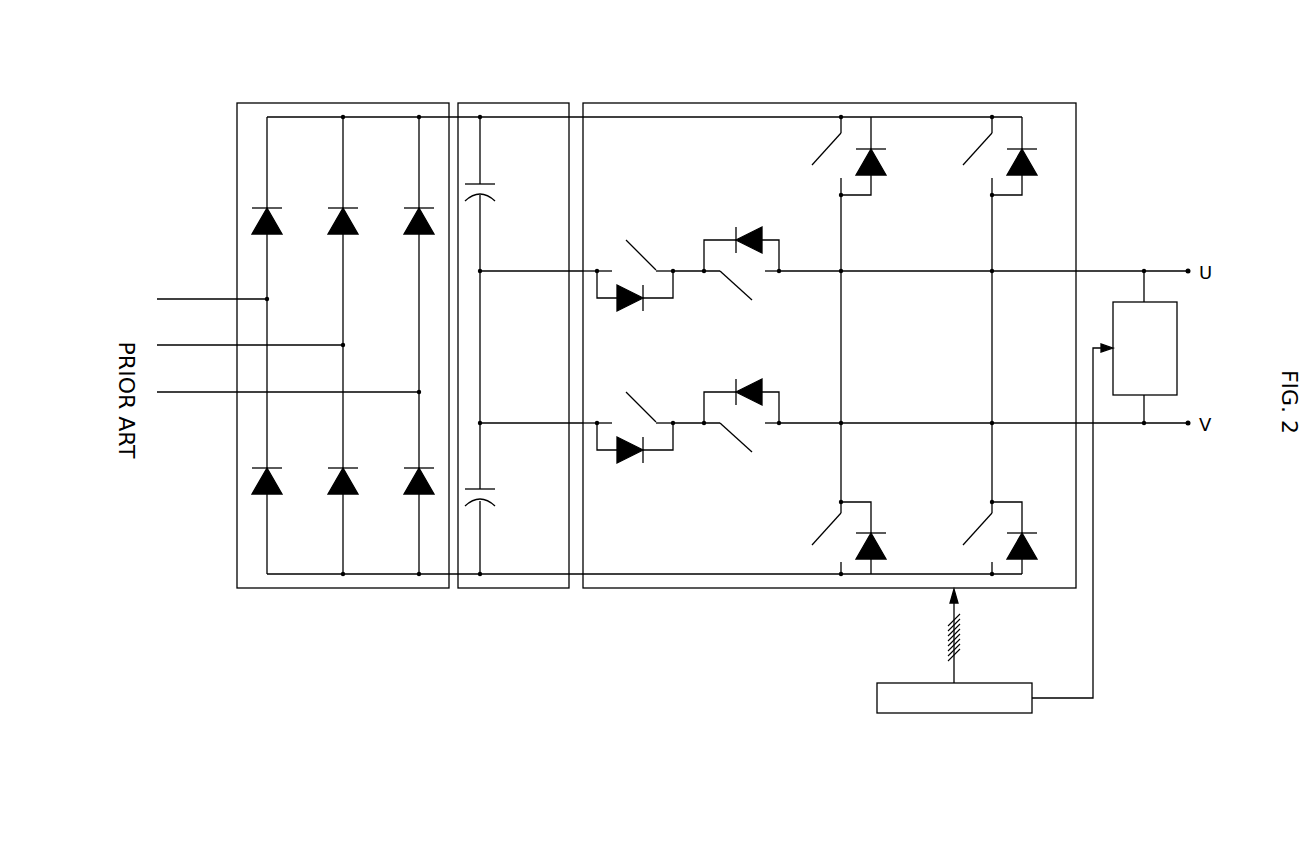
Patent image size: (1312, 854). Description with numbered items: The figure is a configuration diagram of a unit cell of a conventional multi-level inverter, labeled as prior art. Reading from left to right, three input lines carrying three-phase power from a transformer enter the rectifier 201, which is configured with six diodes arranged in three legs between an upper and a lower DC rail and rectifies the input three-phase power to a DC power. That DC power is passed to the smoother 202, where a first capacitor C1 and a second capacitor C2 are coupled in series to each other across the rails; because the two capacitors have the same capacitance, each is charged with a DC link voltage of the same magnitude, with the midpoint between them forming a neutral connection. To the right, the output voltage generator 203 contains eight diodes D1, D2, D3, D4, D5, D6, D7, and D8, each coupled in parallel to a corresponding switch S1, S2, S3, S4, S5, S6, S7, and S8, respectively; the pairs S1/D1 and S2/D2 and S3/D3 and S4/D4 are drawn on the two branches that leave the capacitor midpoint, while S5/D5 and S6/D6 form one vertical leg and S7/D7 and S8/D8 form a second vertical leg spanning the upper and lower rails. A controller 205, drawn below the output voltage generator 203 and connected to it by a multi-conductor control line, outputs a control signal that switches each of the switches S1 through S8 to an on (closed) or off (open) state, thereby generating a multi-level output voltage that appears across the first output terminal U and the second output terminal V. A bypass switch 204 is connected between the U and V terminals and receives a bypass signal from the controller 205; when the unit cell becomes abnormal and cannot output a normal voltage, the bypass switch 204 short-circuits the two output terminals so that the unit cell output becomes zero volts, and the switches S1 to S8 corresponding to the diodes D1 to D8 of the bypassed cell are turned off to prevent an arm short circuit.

The rectifier 201 is at (343, 334).
The smoother 202 is at (516, 334).
The output voltage generator 203 is at (885, 334).
The bypass switch 204 is at (1164, 347).
The controller 205 is at (995, 528).
The first capacitor C1 is at (483, 206).
The second capacitor C2 is at (483, 511).
The switch S1 is at (648, 243).
The switch S2 is at (749, 297).
The switch S3 is at (648, 395).
The switch S4 is at (749, 449).
The switch S5 is at (811, 156).
The switch S6 is at (811, 538).
The switch S7 is at (962, 156).
The switch S8 is at (962, 538).
The diode D1 is at (635, 303).
The diode D2 is at (741, 239).
The diode D3 is at (635, 455).
The diode D4 is at (741, 391).
The diode D5 is at (878, 157).
The diode D6 is at (878, 540).
The diode D7 is at (1029, 157).
The diode D8 is at (1029, 540).